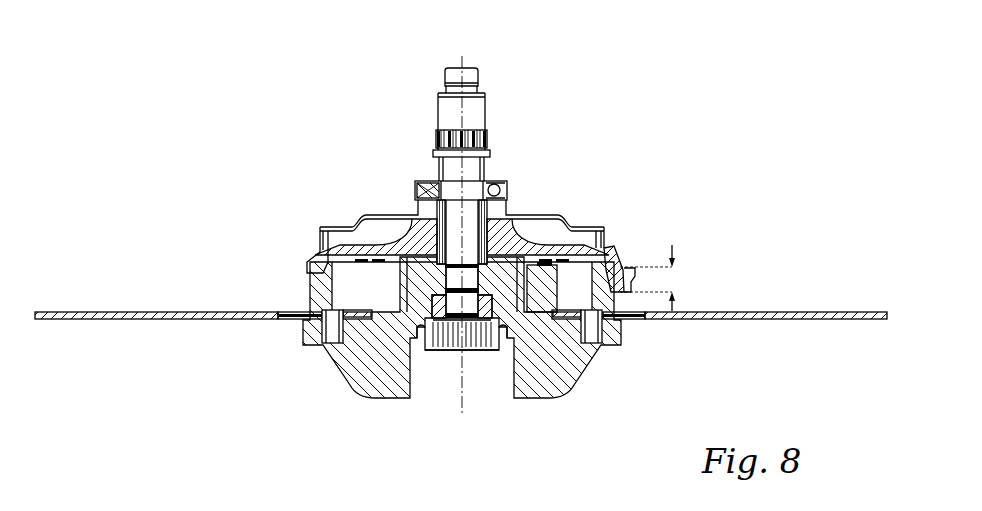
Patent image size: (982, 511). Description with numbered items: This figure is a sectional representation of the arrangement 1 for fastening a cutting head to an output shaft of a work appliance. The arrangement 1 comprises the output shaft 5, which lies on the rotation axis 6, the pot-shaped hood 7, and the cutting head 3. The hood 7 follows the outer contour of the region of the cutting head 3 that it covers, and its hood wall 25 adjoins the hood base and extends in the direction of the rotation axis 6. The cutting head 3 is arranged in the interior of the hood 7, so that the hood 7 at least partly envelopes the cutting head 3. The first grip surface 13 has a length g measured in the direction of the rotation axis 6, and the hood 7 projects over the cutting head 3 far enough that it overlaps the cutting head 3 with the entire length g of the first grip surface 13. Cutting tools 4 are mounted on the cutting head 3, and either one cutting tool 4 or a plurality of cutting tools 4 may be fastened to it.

The arrangement 1 is at (631, 152).
The cutting head 3 is at (545, 374).
The cutting tool 4 is at (127, 311).
The output shaft 5 is at (463, 175).
The rotation axis 6 is at (461, 73).
The hood 7 is at (504, 231).
The first grip surface 13 is at (633, 280).
The hood wall 25 is at (614, 268).